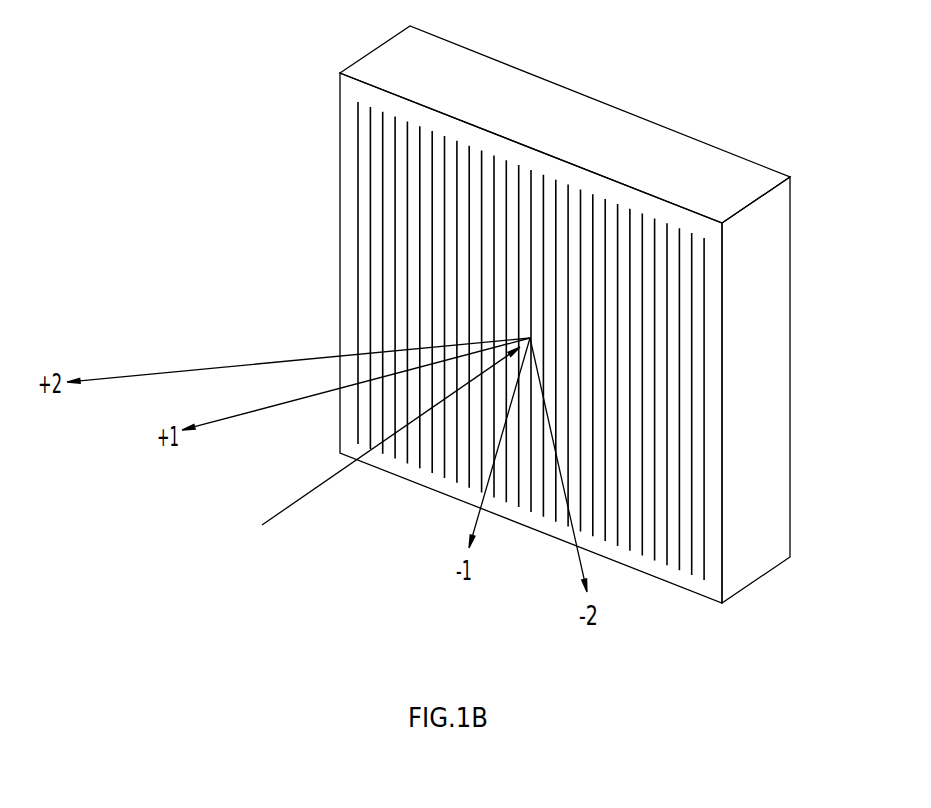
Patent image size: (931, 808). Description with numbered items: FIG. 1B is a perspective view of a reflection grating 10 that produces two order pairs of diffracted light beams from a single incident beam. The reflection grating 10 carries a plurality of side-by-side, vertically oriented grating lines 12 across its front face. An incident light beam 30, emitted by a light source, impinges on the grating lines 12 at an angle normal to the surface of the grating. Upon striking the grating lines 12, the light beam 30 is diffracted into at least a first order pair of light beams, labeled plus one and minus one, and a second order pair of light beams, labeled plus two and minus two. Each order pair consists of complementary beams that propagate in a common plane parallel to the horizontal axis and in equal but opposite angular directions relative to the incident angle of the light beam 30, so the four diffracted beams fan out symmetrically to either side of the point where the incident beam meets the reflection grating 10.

The reflection grating 10 is at (793, 462).
The grating lines 12 is at (428, 142).
The light beam 30 is at (298, 502).